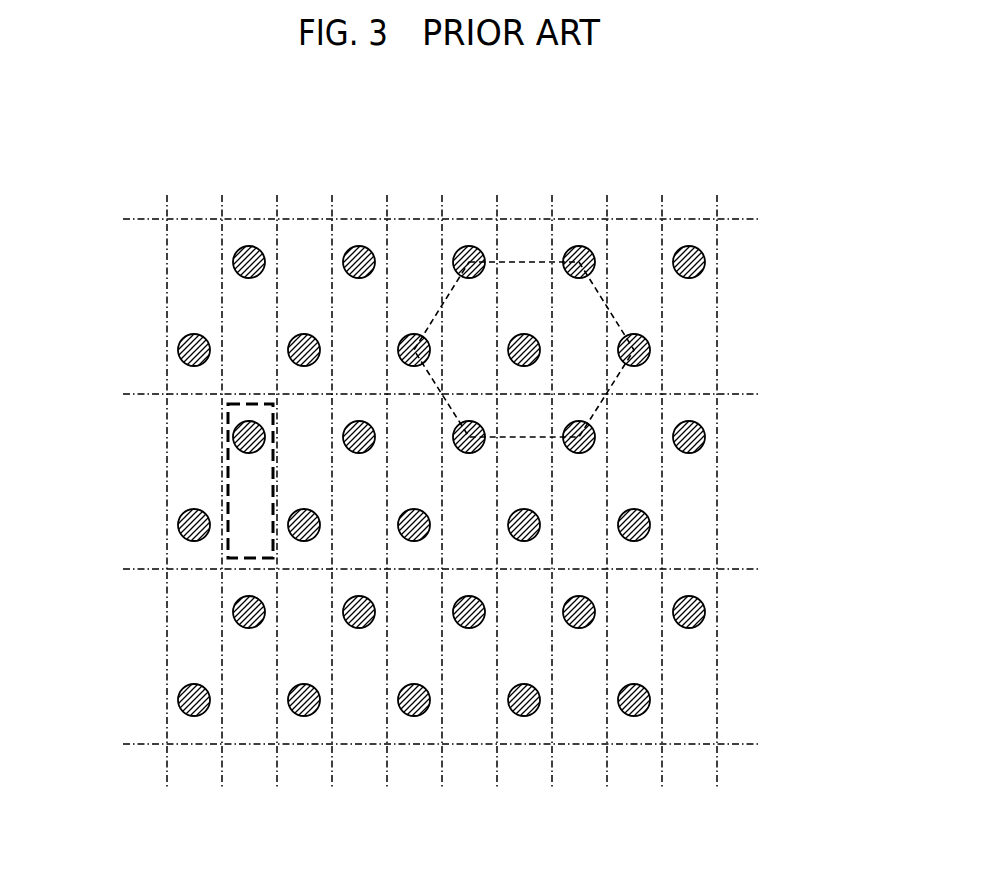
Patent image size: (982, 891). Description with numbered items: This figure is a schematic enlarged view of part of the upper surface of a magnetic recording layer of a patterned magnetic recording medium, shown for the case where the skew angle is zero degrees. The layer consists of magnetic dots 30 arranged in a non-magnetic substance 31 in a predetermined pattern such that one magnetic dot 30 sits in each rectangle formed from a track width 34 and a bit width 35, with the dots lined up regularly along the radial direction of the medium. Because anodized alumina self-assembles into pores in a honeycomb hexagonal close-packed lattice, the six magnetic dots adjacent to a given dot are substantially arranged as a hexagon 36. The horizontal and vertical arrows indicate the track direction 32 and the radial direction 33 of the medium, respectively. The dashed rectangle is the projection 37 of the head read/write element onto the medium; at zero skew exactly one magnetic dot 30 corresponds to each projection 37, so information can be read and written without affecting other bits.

The magnetic dot 30 is at (702, 256).
The non-magnetic substance 31 is at (688, 350).
The track direction 32 is at (580, 152).
The radial direction 33 is at (782, 416).
The track width 34 is at (113, 395).
The bit width 35 is at (222, 196).
The hexagon 36 is at (528, 253).
The projection of the head RW element 37 is at (228, 541).